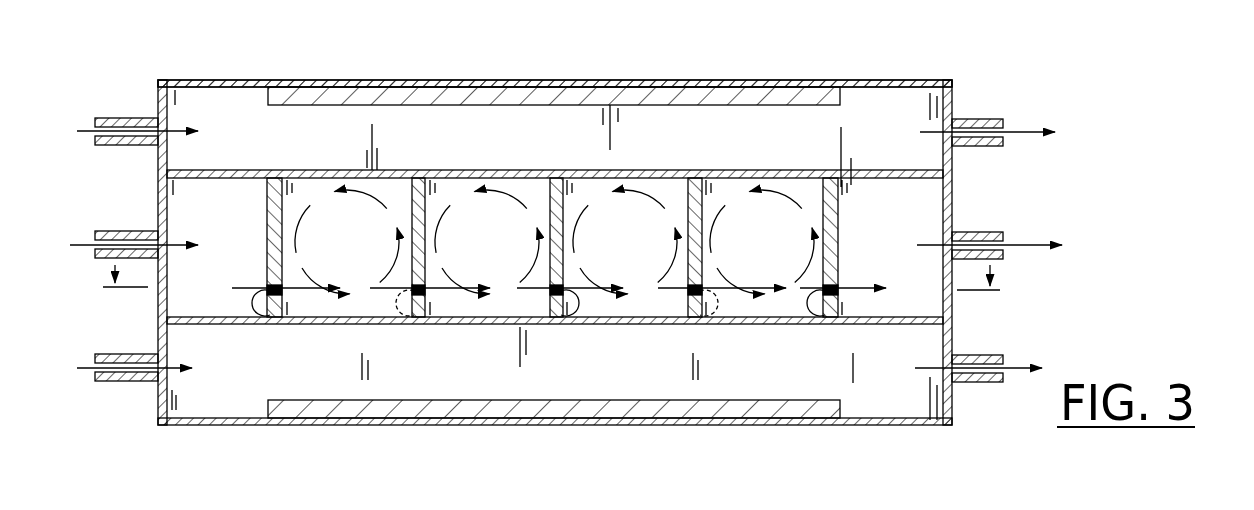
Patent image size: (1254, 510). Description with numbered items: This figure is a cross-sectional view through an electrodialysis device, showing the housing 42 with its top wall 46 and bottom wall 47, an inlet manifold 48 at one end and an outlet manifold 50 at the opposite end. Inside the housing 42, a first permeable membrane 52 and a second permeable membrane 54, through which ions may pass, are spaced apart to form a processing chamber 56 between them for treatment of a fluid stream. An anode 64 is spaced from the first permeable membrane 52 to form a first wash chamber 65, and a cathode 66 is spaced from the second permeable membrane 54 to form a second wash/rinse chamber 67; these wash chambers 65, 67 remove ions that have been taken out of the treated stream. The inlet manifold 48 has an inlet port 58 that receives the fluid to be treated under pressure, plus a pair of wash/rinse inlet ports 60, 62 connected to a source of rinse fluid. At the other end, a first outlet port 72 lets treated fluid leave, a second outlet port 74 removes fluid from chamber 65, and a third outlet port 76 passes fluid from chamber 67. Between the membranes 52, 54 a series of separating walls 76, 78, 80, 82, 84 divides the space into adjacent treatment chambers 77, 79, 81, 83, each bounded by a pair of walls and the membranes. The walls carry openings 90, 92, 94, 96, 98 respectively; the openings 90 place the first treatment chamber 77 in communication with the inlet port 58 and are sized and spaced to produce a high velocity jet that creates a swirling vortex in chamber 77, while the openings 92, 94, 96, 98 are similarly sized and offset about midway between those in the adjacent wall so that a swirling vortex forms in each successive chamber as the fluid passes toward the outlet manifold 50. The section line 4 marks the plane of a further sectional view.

The section line 4- 4 is at (551, 297).
The housing 42 is at (943, 82).
The top wall 46 is at (560, 80).
The bottom wall 47 is at (545, 426).
The inlet manifold 48 is at (153, 413).
The outlet manifold 50 is at (951, 427).
The first permeable membrane 52 is at (530, 170).
The second permeable membrane 54 is at (442, 325).
The processing chamber 56 is at (221, 325).
The inlet port 58 is at (140, 231).
The wash/rinse inlet port 60 is at (138, 118).
The wash/rinse inlet port 62 is at (147, 382).
The anode 64 is at (712, 105).
The first wash chamber 65 is at (308, 150).
The cathode 66 is at (590, 400).
The second wash/rinse chamber 67 is at (731, 389).
The first outlet port 72 is at (982, 232).
The second outlet port 74 is at (985, 147).
The third outlet port / separating wall 76 is at (983, 382).
The first treatment chamber 77 is at (325, 253).
The separating wall 78 is at (428, 203).
The treatment chamber 79 is at (469, 253).
The separating wall 80 is at (564, 204).
The treatment chamber 81 is at (607, 253).
The separating wall 82 is at (703, 223).
The treatment chamber 83 is at (743, 253).
The separating wall 84 is at (838, 240).
The openings 90 is at (266, 326).
The openings 92 is at (405, 326).
The openings 94 is at (567, 326).
The openings 96 is at (707, 326).
The openings 98 is at (810, 326).